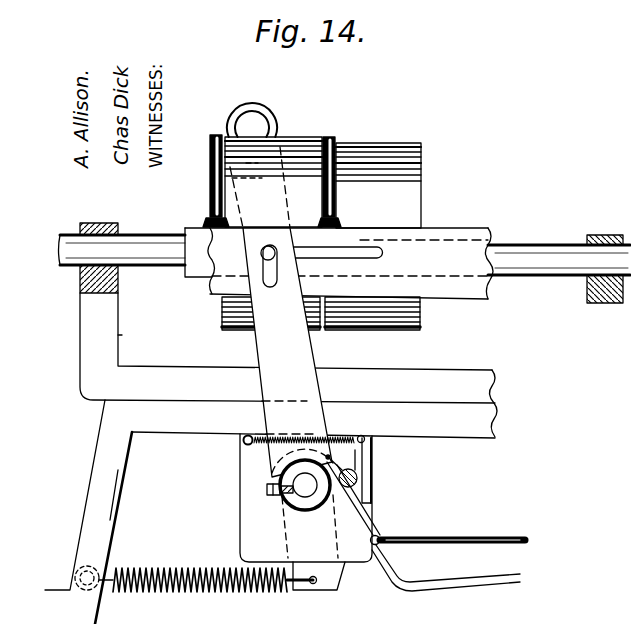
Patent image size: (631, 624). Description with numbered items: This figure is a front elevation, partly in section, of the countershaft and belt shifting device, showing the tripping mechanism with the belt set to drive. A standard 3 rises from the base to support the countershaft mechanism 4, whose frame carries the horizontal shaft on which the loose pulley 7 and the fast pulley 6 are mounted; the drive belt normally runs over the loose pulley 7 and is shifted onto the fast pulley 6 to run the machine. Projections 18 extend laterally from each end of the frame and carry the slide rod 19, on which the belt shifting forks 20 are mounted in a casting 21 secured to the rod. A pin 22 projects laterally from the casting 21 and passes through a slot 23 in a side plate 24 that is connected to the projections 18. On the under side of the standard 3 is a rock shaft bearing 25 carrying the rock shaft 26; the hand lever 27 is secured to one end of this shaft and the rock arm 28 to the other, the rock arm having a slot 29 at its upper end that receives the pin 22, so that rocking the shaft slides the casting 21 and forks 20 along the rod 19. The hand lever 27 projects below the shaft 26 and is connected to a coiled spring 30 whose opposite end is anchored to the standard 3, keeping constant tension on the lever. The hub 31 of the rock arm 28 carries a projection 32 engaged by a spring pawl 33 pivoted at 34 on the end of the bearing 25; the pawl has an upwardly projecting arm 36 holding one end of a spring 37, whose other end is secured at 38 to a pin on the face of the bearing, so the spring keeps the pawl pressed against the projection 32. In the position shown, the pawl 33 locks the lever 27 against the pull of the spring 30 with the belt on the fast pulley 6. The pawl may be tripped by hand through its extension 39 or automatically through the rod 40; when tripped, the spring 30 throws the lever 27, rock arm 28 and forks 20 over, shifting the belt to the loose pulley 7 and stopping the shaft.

The standard 3 is at (112, 512).
The countershaft mechanism 4 is at (125, 338).
The fast pulley 6 is at (311, 139).
The loose pulley 7 is at (422, 187).
The projections 18 is at (92, 312).
The slide rod 19 is at (125, 236).
The belt shifting forks 20 is at (210, 172).
The casting 21 is at (198, 274).
The pin 22 is at (261, 253).
The slot 23 is at (375, 260).
The side plate 24 is at (339, 263).
The rock shaft bearing 25 is at (242, 479).
The rock shaft 26 is at (305, 497).
The hand lever 27 is at (272, 146).
The rock arm 28 is at (284, 352).
The slot 29 is at (280, 275).
The coiled spring 30 is at (196, 570).
The hub 31 is at (283, 507).
The projection 32 is at (329, 457).
The spring pawl 33 is at (370, 508).
The pivot 34 is at (358, 478).
The upwardly projecting arm 36 is at (372, 455).
The spring 37 is at (352, 440).
The spring attachment pin 38 is at (244, 442).
The extension 39 is at (453, 584).
The rod 40 is at (445, 537).